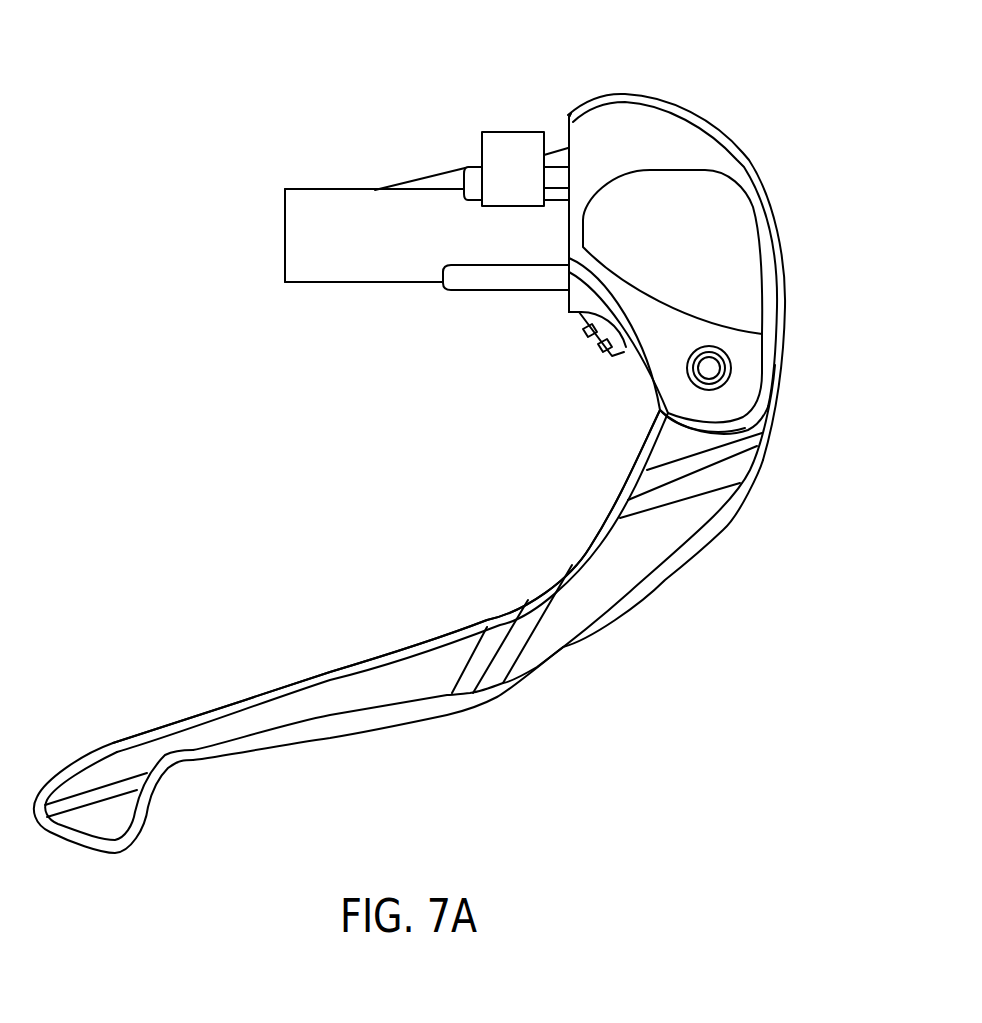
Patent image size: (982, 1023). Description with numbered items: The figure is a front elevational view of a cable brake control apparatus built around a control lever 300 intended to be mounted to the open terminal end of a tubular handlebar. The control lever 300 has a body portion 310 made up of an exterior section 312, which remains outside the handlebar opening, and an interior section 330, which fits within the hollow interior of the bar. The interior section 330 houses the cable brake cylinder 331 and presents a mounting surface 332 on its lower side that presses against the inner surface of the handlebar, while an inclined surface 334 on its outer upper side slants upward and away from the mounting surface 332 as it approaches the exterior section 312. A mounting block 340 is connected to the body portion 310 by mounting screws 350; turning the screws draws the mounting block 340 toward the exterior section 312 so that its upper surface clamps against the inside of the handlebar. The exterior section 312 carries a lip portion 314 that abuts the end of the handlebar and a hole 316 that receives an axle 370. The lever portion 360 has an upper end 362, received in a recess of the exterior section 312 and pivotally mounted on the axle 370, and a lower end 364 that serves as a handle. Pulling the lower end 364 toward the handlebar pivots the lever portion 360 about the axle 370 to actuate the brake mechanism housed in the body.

The control lever 300 is at (427, 383).
The body portion 310 is at (557, 363).
The exterior section 312 is at (680, 85).
The lip portion 314 is at (567, 303).
The hole 316 is at (730, 357).
The interior section 330 is at (403, 300).
The cable brake cylinder 331 is at (323, 283).
The mounting surface 332 is at (490, 292).
The inclined surface 334 is at (427, 175).
The mounting block 340 is at (515, 130).
The mounting screws 350 is at (470, 160).
The lever portion 360 is at (395, 627).
The upper end 362 is at (782, 218).
The lower end 364 is at (220, 765).
The axle 370 is at (717, 370).